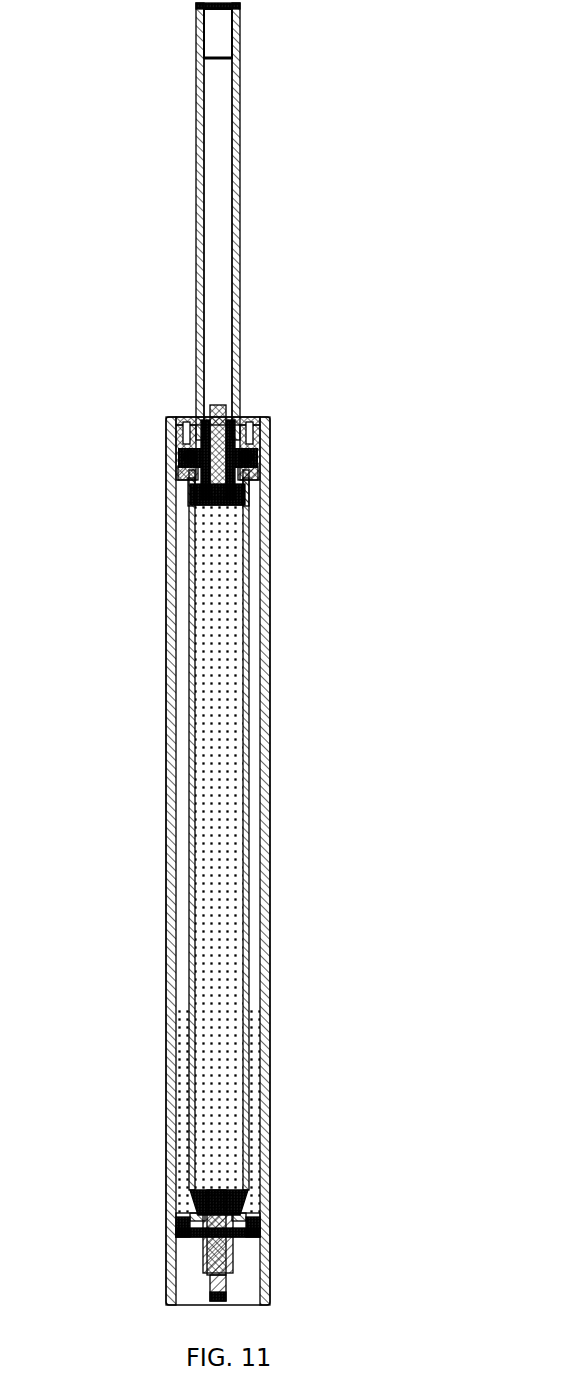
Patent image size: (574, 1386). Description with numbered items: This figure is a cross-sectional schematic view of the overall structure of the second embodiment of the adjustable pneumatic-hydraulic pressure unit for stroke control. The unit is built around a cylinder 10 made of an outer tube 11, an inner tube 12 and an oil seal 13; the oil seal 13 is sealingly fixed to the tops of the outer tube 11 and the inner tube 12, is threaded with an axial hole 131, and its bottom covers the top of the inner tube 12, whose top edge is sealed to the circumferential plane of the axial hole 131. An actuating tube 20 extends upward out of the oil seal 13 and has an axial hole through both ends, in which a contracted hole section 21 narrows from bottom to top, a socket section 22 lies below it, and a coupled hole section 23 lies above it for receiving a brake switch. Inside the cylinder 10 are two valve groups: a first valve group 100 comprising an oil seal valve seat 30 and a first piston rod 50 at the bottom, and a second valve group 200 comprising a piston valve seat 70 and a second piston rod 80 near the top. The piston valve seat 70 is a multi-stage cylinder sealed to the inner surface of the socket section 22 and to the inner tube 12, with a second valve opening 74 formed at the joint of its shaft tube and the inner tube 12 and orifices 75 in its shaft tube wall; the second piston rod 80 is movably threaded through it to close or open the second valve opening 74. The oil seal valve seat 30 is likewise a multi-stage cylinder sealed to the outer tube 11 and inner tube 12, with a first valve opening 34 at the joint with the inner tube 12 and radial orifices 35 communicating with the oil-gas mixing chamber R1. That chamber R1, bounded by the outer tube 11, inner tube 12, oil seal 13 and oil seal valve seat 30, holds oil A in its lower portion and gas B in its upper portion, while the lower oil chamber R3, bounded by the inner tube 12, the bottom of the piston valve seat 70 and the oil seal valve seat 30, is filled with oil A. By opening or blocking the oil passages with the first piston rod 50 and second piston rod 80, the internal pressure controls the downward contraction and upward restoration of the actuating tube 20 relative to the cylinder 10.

The actuating tube 20 is at (240, 108).
The coupled hole section 23 is at (237, 258).
The cylinder 10 is at (168, 846).
The outer tube 11 is at (169, 536).
The inner tube 12 is at (190, 585).
The oil seal 13 is at (182, 420).
The axial hole 131 is at (180, 460).
The contracted hole section 21 is at (206, 406).
The socket section 22 is at (257, 430).
The piston valve seat 70 is at (260, 458).
The second valve opening 74 is at (190, 490).
The orifices 75 is at (248, 440).
The second piston rod 80 is at (248, 495).
The second valve group 200 is at (259, 447).
The oil-gas mixing chamber R1 is at (253, 761).
The lower oil chamber R3 is at (234, 875).
The oil A is at (219, 967).
The gas B is at (184, 849).
The oil seal valve seat 30 is at (258, 1218).
The first valve opening 34 is at (176, 1190).
The orifices 35 is at (180, 1217).
The first piston rod 50 is at (240, 1190).
The first valve group 100 is at (251, 1222).